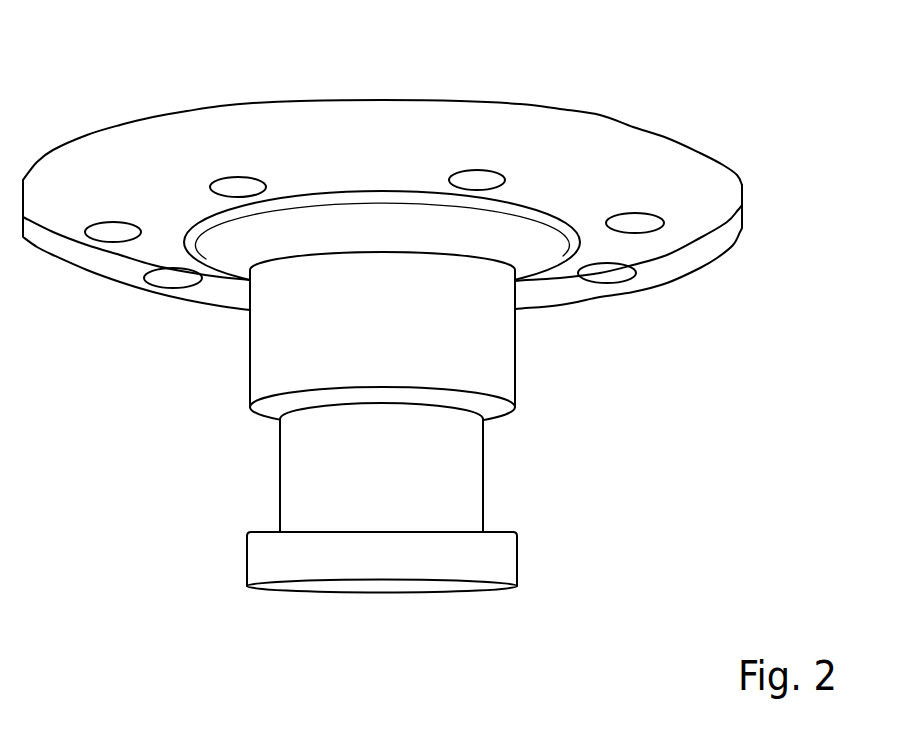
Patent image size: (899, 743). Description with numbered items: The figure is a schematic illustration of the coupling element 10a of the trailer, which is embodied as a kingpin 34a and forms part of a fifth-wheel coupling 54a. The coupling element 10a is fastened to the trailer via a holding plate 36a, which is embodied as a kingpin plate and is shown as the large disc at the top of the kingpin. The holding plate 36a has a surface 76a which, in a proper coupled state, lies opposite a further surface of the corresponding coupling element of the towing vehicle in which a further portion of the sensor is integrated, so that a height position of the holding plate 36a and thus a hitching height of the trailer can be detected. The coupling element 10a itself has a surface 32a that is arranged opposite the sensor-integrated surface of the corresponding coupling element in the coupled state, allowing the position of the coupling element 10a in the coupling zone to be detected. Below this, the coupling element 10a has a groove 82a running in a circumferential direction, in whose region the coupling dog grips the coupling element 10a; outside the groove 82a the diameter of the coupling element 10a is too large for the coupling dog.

The holding plate 36a is at (582, 138).
The surface of the holding plate 76a is at (63, 227).
The fifth-wheel coupling 54a is at (385, 299).
The surface of the coupling element 32a is at (467, 336).
The groove 82a is at (425, 498).
The coupling element 10a is at (513, 468).
The kingpin 34a is at (437, 467).